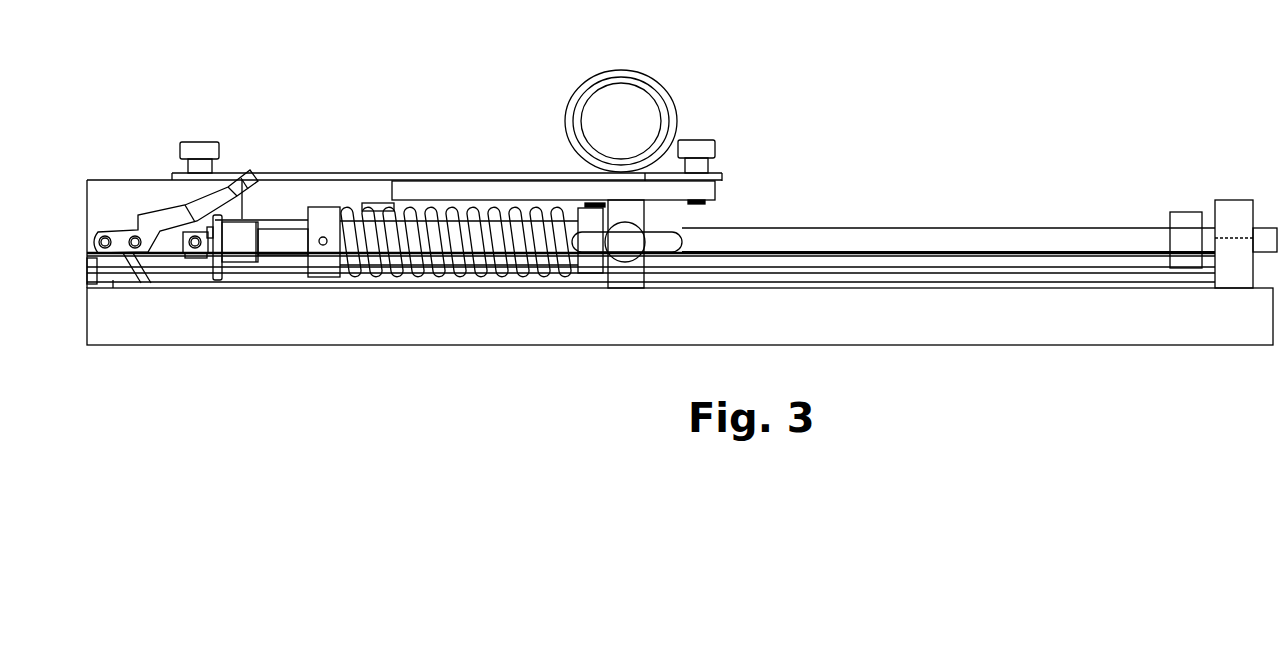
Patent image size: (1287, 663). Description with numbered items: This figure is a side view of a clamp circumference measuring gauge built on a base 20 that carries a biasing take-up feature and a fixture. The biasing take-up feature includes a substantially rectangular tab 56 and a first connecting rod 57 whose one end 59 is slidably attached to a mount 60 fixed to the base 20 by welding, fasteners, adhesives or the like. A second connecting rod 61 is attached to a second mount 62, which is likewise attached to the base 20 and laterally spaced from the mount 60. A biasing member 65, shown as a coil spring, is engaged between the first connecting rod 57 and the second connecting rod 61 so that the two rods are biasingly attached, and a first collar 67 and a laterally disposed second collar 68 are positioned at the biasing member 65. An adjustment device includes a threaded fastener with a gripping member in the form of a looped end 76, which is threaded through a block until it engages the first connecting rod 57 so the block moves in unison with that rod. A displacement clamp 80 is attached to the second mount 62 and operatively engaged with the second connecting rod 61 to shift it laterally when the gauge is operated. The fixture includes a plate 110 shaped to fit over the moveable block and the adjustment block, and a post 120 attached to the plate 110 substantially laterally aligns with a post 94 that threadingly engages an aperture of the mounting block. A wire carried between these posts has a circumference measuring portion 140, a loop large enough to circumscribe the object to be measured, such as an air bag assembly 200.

The base 20 is at (508, 330).
The substantially rectangular tab 56 is at (1188, 252).
The first connecting rod 57 is at (1035, 242).
The end 59 is at (1265, 238).
The mount 60 is at (1237, 272).
The second connecting rod 61 is at (276, 345).
The second mount 62 is at (212, 345).
The biasing member 65 is at (445, 270).
The first collar 67 is at (325, 272).
The second collar 68 is at (588, 262).
The looped end 76 is at (640, 246).
The displacement clamp 80 is at (177, 217).
The post 94 is at (205, 150).
The plate 110 is at (706, 193).
The post 120 is at (700, 150).
The circumference measuring portion 140 is at (615, 75).
The air bag assembly 200 is at (640, 87).